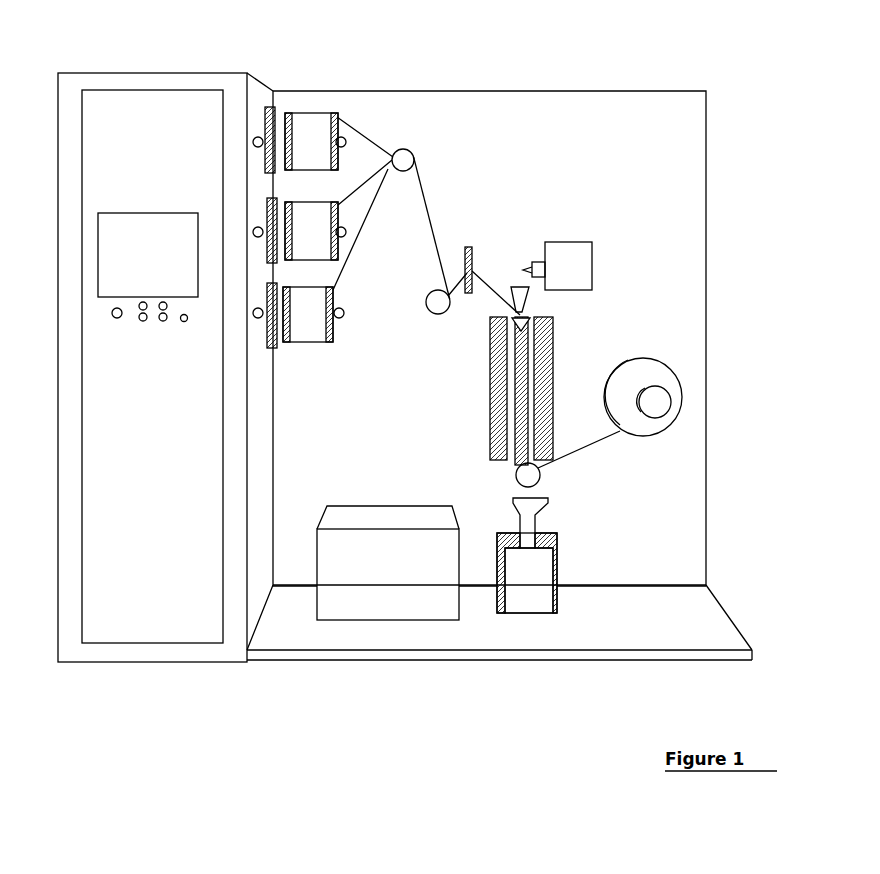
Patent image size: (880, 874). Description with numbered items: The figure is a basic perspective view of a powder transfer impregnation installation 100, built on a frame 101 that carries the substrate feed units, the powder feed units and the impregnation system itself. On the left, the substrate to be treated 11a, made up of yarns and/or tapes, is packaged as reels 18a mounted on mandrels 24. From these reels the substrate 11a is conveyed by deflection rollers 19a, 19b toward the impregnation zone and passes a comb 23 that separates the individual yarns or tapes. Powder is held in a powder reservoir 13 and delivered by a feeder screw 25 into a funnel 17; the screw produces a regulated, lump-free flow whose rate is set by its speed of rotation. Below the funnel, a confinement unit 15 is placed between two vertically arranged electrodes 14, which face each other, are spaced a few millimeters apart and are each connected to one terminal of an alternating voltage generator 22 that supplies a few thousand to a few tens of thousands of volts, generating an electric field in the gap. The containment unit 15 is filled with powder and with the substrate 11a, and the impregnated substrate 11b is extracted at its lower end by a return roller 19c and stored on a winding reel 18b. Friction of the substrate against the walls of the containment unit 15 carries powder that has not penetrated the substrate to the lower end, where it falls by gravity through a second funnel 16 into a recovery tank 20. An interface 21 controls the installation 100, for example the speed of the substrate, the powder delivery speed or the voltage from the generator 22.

The impregnation installation 100 is at (456, 77).
The frame 101 is at (633, 143).
The interface 21 is at (117, 247).
The mandrels 24 is at (337, 115).
The reels 18a is at (308, 328).
The substrate to be treated 11a is at (420, 217).
The impregnated substrate 11b is at (600, 454).
The deflection roller 19a is at (414, 158).
The deflection roller 19b is at (427, 311).
The return roller 19c is at (542, 478).
The comb 23 is at (472, 248).
The feeder screw 25 is at (522, 268).
The powder reservoir 13 is at (568, 258).
The funnel 17 is at (533, 293).
The electrodes 14 is at (487, 392).
The confinement unit 15 is at (554, 336).
The winding reel 18b is at (683, 422).
The second funnel 16 is at (547, 502).
The recovery tank 20 is at (525, 592).
The alternating voltage generator 22 is at (378, 584).